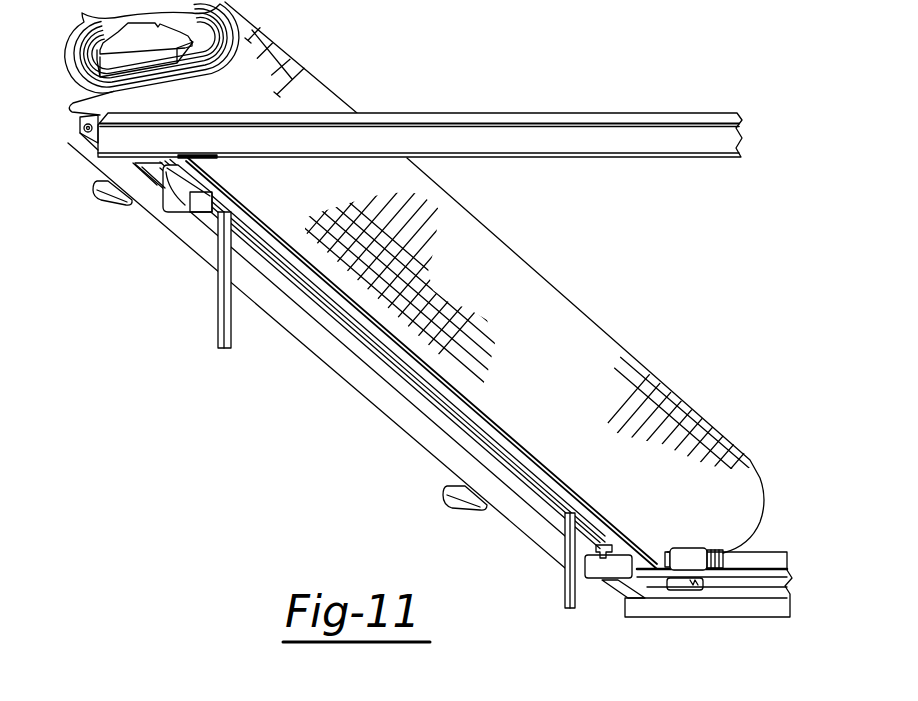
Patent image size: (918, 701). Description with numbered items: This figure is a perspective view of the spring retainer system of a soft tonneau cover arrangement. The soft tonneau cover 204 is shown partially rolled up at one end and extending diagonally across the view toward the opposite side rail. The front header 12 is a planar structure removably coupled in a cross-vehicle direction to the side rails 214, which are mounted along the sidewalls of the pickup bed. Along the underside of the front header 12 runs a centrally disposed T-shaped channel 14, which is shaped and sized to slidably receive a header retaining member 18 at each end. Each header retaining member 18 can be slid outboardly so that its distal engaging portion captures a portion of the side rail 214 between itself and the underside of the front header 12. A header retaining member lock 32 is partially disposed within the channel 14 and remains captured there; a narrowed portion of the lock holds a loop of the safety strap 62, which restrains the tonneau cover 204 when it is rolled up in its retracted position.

The front header 12 is at (405, 385).
The T-shaped channel 14 is at (447, 403).
The header retaining member 18 is at (160, 188).
The header retaining member lock 32 is at (605, 545).
The safety strap 62 is at (220, 325).
The tonneau cover 204 is at (578, 308).
The side rails 214 is at (498, 113).